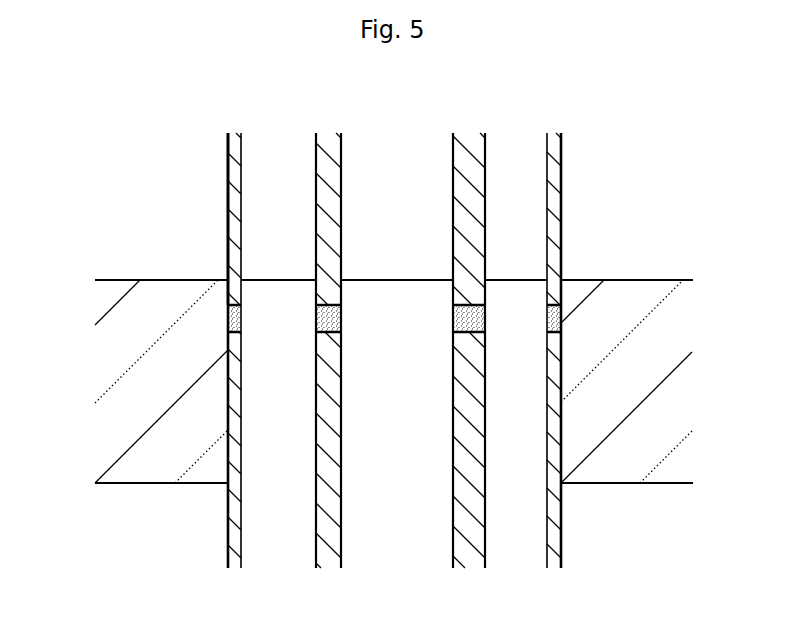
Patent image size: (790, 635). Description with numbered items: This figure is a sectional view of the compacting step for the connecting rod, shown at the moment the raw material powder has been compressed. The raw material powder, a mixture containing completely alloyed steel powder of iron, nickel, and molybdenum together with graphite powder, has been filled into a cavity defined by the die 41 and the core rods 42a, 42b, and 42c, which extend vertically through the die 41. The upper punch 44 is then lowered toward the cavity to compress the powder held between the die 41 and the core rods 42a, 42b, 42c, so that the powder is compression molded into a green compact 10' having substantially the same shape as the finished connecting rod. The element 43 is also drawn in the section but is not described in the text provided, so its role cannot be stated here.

The bonding material / solder 10' is at (420, 282).
The substrate 41 is at (118, 353).
The first hole 42a is at (277, 535).
The second hole 42b is at (517, 535).
The third hole 42c is at (395, 535).
The conductive layer 43 is at (226, 515).
The wiring 44 is at (226, 187).